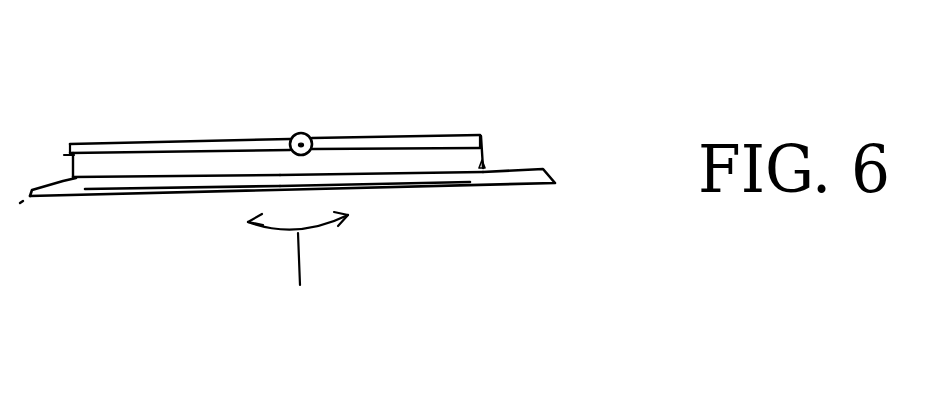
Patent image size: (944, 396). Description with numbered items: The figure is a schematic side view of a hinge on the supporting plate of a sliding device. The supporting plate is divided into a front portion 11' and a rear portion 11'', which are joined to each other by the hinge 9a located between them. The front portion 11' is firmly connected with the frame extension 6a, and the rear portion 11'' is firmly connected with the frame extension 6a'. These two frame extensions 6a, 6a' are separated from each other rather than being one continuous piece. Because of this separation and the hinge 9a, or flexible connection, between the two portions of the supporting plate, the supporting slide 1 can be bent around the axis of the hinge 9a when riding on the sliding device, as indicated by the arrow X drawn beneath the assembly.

The supporting slide 1 is at (225, 192).
The frame extension 6a is at (160, 238).
The frame extension 6a' is at (382, 228).
The hinge 9a is at (298, 131).
The front portion of the supporting plate 11' is at (180, 94).
The rear portion of the supporting plate 11'' is at (396, 83).
The arrow x is at (292, 318).